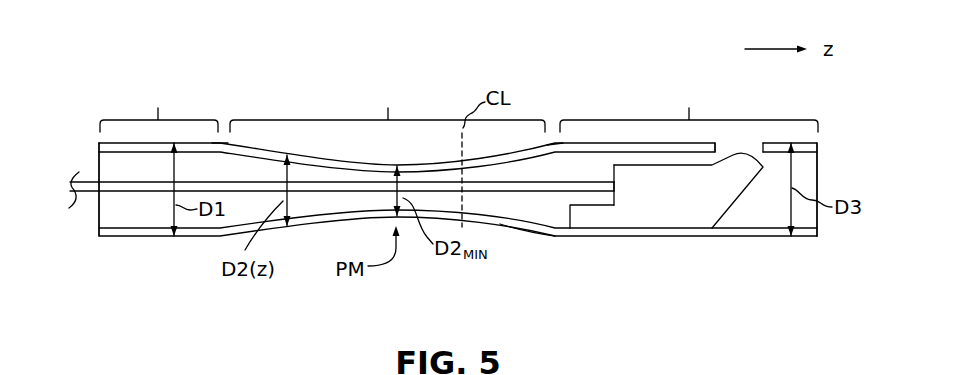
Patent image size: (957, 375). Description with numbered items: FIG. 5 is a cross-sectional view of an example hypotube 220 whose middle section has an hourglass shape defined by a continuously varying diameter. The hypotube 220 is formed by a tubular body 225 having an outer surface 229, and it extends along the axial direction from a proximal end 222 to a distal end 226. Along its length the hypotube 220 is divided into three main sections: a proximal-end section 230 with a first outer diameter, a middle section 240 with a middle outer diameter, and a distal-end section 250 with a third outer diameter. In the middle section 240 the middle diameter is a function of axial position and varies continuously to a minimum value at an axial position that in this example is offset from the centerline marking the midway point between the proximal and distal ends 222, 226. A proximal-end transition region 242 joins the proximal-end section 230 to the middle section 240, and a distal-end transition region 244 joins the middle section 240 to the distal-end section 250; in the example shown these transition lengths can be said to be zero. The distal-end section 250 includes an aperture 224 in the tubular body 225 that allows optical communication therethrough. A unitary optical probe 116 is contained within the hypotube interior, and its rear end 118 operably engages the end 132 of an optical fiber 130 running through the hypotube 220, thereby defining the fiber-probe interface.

The hypotube 220 is at (213, 42).
The proximal end 222 is at (98, 163).
The proximal-end section 230 is at (159, 103).
The middle section 240 is at (387, 101).
The distal-end section 250 is at (689, 103).
The proximal-end transition region 242 is at (222, 140).
The distal-end transition region 244 is at (554, 142).
The aperture 224 is at (752, 146).
The outer surface 229 is at (812, 145).
The distal end 226 is at (818, 160).
The tubular body 225 is at (527, 225).
The optical fiber 130 is at (132, 191).
The end of optical fiber 132 is at (602, 186).
The unitary optical probe 116 is at (675, 208).
The rear end 118 is at (602, 203).